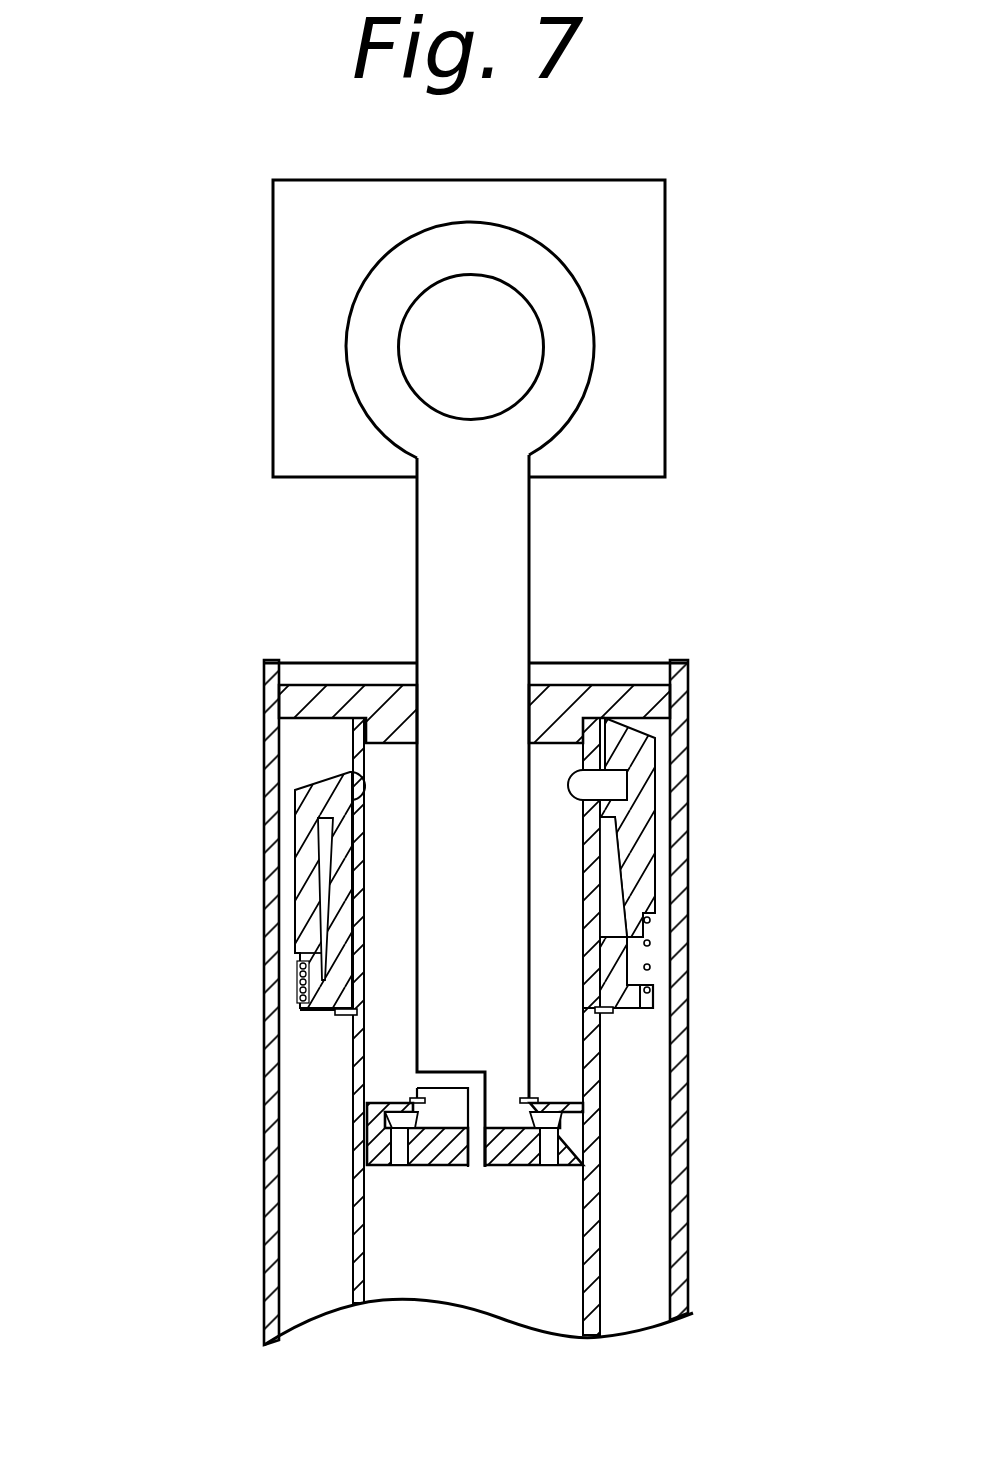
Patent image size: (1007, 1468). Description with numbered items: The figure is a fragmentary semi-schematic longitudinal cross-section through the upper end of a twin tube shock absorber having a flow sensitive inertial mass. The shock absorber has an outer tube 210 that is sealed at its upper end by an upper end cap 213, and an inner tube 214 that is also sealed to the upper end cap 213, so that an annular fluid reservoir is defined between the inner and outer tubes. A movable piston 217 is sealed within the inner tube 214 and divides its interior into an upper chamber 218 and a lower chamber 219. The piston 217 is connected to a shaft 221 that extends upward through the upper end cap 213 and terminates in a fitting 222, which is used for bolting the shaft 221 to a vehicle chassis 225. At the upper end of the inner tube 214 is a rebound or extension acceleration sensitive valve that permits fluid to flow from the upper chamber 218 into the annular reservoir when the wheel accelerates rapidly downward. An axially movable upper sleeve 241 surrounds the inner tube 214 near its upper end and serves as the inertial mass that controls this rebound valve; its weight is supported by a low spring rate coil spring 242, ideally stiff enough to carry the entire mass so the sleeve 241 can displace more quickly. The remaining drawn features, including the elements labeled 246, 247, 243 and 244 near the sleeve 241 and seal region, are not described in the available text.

The vehicle chassis 225 is at (653, 268).
The fitting 222 is at (580, 370).
The shaft 221 is at (508, 558).
The upper end cap 213 is at (615, 663).
The outer tube 210 is at (683, 828).
The upper sleeve 241 is at (653, 763).
The wedge seal 246 is at (355, 778).
The inclined surface 247 is at (624, 897).
The coil spring 242 is at (650, 943).
The lip 243 is at (640, 973).
The spring seal 244 is at (297, 957).
The upper chamber 218 is at (350, 1013).
The piston 217 is at (578, 1120).
The inner tube 214 is at (603, 1203).
The lower chamber 219 is at (515, 1247).